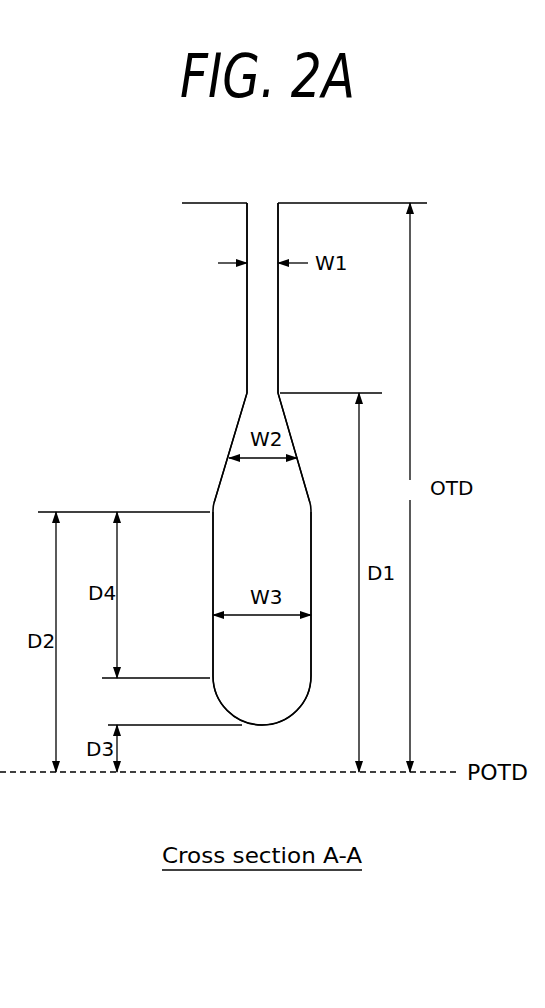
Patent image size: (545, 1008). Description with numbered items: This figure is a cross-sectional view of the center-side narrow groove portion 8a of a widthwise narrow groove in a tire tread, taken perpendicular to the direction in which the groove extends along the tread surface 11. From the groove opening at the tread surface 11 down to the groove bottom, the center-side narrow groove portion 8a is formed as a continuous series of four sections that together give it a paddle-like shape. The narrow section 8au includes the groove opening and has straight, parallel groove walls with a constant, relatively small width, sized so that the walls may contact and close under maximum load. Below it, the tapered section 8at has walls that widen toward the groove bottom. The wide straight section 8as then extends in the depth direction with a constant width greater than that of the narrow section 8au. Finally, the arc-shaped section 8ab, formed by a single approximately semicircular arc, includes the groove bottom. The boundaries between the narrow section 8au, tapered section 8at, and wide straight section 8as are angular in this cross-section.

The center-side narrow groove portion 8a is at (262, 199).
The tread surface 11 is at (327, 203).
The narrow section 8au is at (263, 316).
The tapered section 8at is at (258, 480).
The wide straight section 8as is at (260, 557).
The arc-shaped section 8ab is at (263, 703).